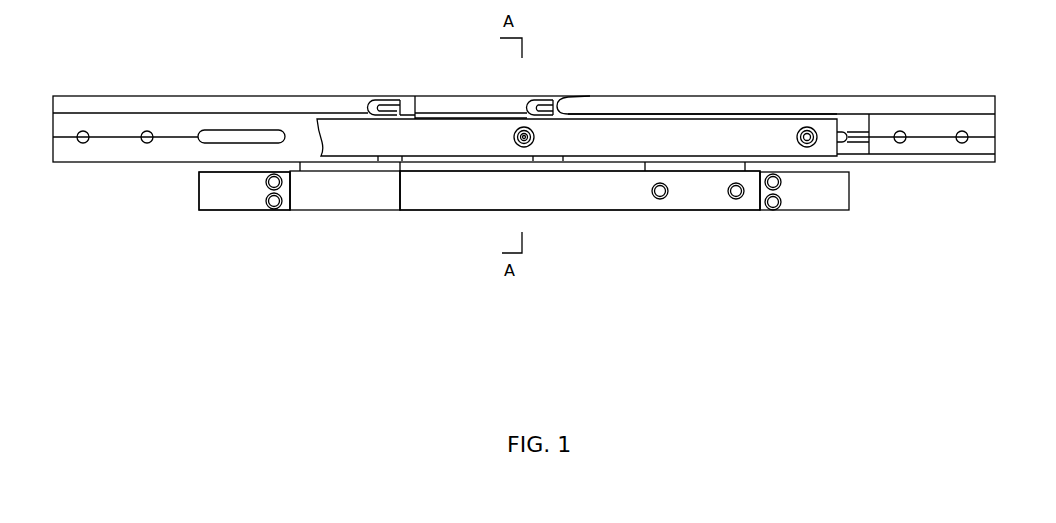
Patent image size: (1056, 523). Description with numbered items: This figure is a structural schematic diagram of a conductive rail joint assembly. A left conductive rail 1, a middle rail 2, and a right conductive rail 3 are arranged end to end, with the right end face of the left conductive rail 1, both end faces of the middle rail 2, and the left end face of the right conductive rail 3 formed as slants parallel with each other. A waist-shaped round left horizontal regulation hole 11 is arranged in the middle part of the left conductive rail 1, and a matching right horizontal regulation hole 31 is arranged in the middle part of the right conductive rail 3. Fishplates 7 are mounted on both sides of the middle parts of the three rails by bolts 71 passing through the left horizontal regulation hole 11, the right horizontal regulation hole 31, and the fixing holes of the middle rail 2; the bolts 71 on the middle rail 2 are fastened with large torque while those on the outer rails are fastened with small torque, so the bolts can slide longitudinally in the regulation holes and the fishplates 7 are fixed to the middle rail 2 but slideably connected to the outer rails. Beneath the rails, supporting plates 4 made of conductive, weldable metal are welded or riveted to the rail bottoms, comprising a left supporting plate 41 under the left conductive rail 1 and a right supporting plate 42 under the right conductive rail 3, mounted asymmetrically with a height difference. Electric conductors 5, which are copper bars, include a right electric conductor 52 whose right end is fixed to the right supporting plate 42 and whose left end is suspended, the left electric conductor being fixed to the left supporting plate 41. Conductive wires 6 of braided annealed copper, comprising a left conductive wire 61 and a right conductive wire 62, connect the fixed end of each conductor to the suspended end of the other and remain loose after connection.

The left conductive rail 1 is at (152, 107).
The left horizontal regulation hole 11 is at (228, 135).
The middle rail 2 is at (512, 108).
The right conductive rail 3 is at (830, 110).
The right horizontal regulation hole 31 is at (847, 140).
The fishplates 7 is at (648, 132).
The bolts 71 is at (524, 146).
The supporting plates 4 is at (350, 170).
The left supporting plate 41 is at (348, 230).
The right supporting plate 42 is at (673, 168).
The electric conductors 5 is at (570, 188).
The right electric conductor 52 is at (580, 240).
The conductive wires 6 is at (233, 198).
The left conductive wire 61 is at (228, 235).
The right conductive wire 62 is at (827, 198).